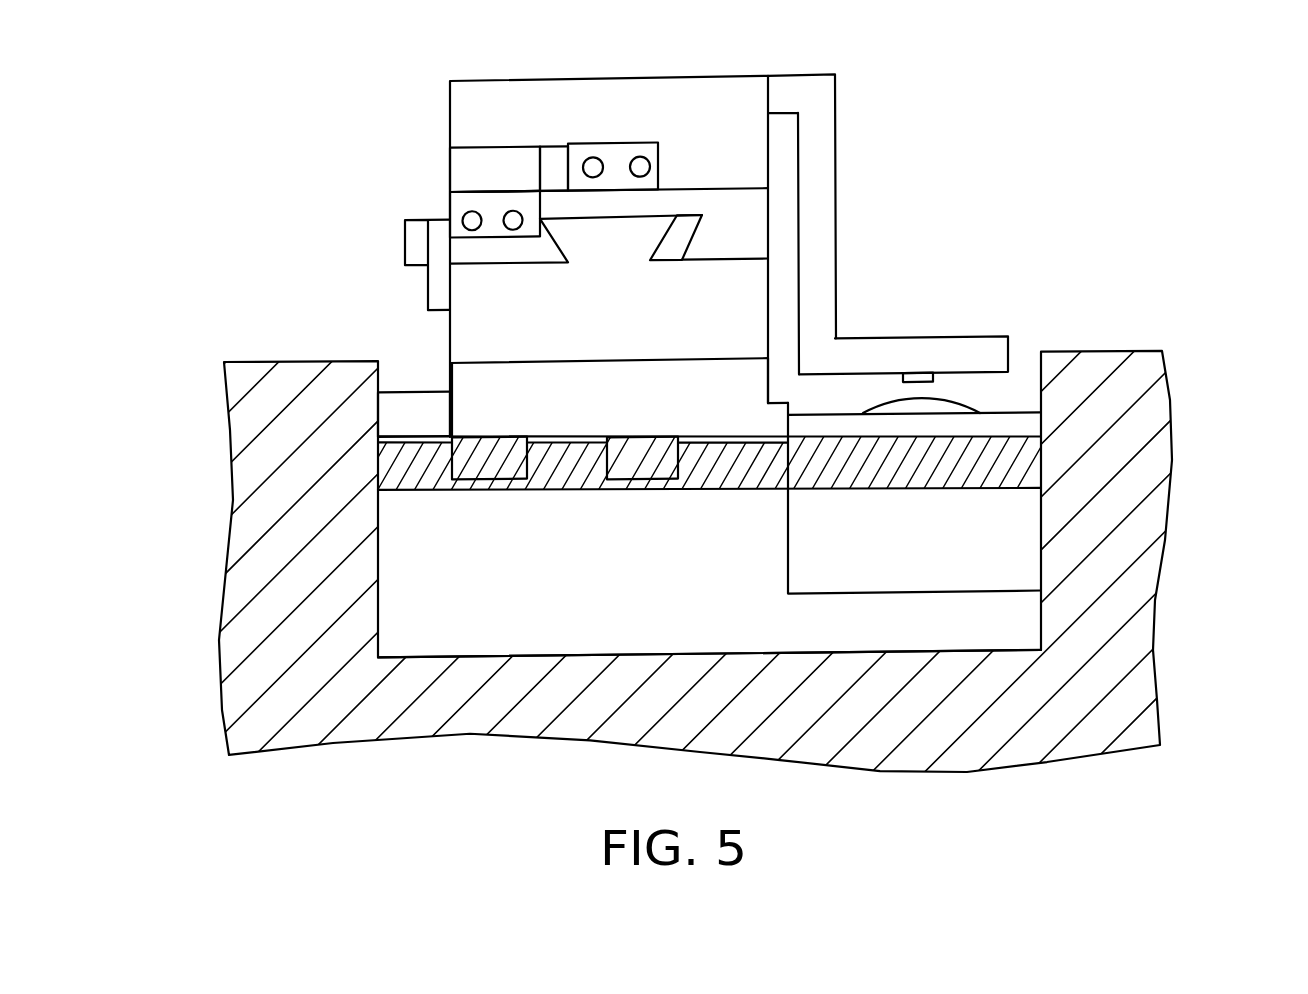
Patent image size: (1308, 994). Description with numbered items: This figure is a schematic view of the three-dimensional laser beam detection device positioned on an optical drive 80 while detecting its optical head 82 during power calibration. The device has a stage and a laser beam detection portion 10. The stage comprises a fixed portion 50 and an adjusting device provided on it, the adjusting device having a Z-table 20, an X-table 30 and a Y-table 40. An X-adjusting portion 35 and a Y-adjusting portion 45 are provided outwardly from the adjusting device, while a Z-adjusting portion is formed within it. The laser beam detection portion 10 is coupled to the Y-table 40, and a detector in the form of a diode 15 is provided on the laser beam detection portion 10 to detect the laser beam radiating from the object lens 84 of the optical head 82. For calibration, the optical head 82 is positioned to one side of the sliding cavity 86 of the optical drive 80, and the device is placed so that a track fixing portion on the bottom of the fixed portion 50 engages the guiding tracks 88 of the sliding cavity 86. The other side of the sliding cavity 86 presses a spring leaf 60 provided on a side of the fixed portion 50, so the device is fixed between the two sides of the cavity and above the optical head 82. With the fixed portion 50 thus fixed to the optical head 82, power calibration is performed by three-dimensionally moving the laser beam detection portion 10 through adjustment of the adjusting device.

The laser beam detection portion 10 is at (822, 100).
The diode 15 is at (920, 372).
The Z-table 20 is at (750, 312).
The X-table 30 is at (753, 227).
The X-adjusting portion 35 is at (418, 243).
The Y-table 40 is at (637, 105).
The Y-adjusting portion 45 is at (463, 172).
The fixed portion 50 is at (752, 390).
The spring leaf 60 is at (410, 408).
The optical drive 80 is at (1130, 600).
The optical head 82 is at (1030, 535).
The object lens 84 is at (940, 397).
The sliding cavity 86 is at (535, 628).
The guiding tracks 88 is at (1042, 447).